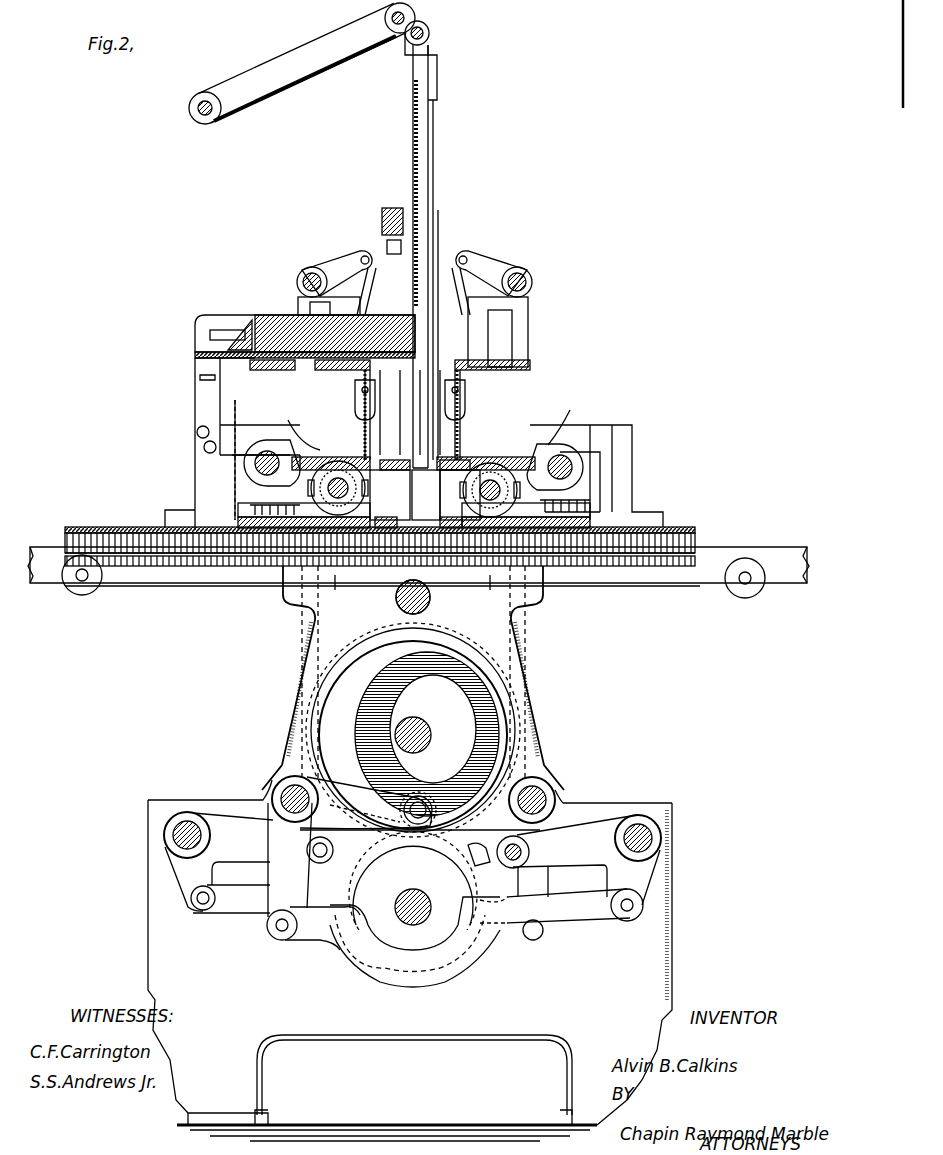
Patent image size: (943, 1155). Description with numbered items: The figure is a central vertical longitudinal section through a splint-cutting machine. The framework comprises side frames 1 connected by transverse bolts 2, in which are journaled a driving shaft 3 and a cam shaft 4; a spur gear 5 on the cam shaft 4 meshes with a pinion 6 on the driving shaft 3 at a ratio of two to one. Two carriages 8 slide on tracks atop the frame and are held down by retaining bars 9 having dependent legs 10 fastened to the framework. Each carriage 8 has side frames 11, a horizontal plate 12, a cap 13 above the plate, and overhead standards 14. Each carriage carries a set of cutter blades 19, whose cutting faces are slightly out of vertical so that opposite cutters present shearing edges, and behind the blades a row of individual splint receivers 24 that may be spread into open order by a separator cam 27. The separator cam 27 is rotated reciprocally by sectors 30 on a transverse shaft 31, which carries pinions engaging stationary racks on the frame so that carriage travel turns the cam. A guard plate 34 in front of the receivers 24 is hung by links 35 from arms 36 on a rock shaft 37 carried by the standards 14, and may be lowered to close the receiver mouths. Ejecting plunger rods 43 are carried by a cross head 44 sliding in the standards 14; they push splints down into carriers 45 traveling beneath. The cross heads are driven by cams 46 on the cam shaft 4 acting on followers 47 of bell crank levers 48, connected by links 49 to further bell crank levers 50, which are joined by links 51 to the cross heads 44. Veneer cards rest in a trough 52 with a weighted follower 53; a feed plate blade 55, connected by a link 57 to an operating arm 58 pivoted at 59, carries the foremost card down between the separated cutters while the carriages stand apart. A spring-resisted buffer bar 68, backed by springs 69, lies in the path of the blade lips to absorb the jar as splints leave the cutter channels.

The side frames 1 is at (540, 748).
The transverse bolts 2 is at (430, 598).
The driving shaft 3 is at (413, 889).
The cam shaft 4 is at (425, 728).
The spur gear 5 is at (500, 657).
The pinion 6 is at (478, 866).
The carriages 8 is at (300, 495).
The retaining bars 9 is at (245, 405).
The dependent legs or standards 10 is at (200, 492).
The carriage side frames 11 is at (240, 478).
The horizontal plate 12 is at (348, 560).
The cap 13 is at (315, 455).
The overhead standards 14 is at (300, 306).
The cutter blades 19 is at (425, 494).
The splint receivers 24 is at (378, 505).
The separator cam 27 is at (485, 478).
The sectors 30 is at (434, 413).
The transverse shaft 31 is at (262, 440).
The guard plate 34 is at (375, 438).
The links 35 is at (413, 291).
The arms 36 is at (348, 262).
The rock shaft 37 is at (310, 268).
The plunger rods 43 is at (384, 385).
The cross head 44 is at (300, 366).
The carriers 45 is at (700, 532).
The cams 46 is at (490, 710).
The followers 47 is at (425, 795).
The bell crank levers 48 is at (342, 805).
The links 49 is at (568, 905).
The bell crank levers 50 is at (412, 862).
The links 51 is at (305, 630).
The trough 52 is at (235, 318).
The follower 53 is at (242, 360).
The feed plate blade 55 is at (422, 253).
The link 57 is at (410, 40).
The operating arm 58 is at (254, 96).
The pivot 59 is at (190, 110).
The buffer bar 68 is at (428, 588).
The springs 69 is at (570, 515).